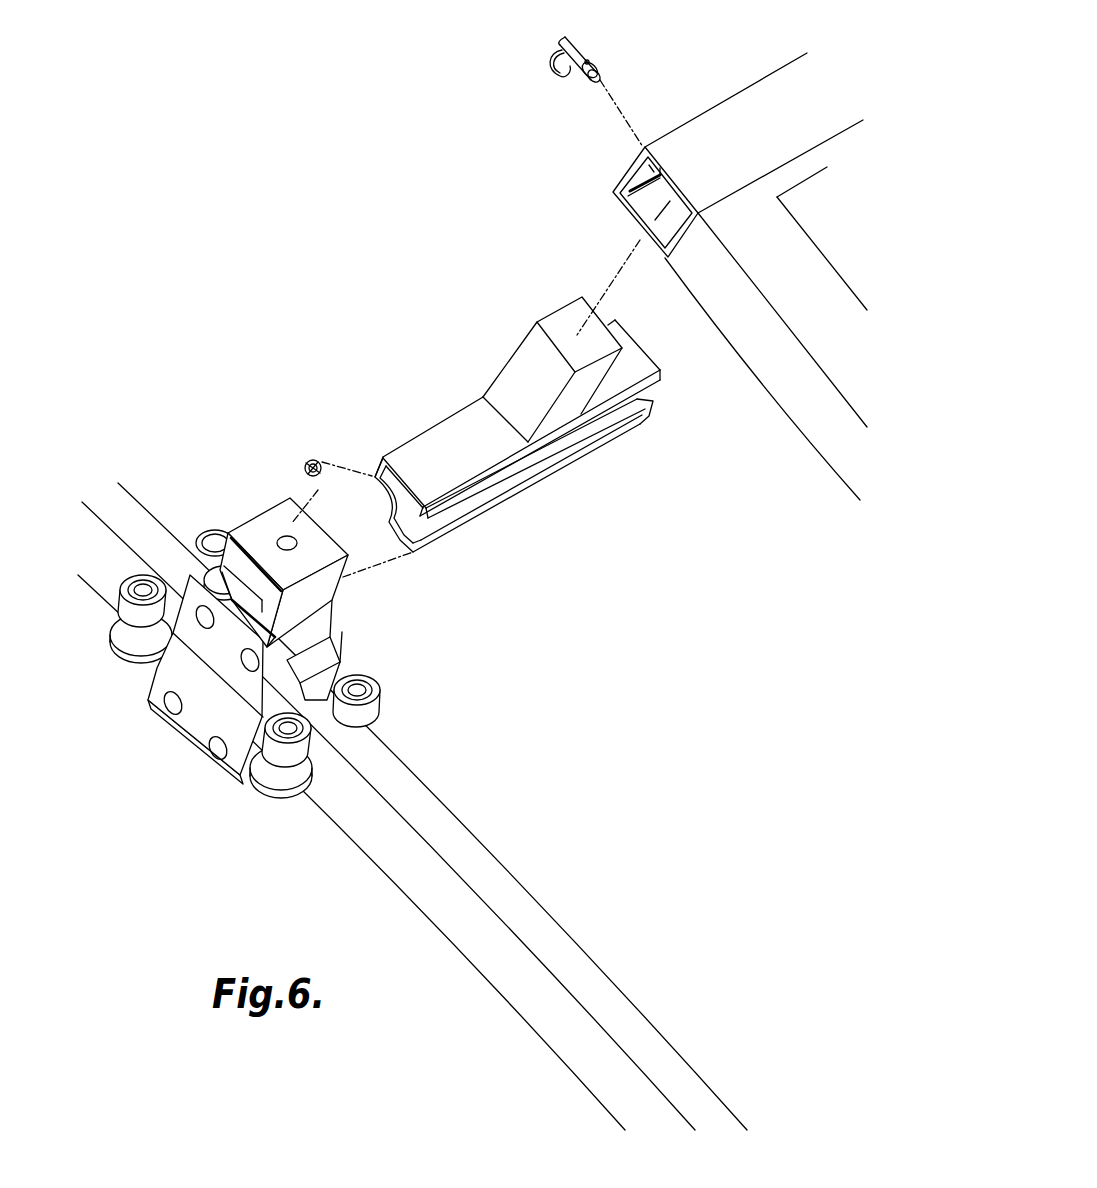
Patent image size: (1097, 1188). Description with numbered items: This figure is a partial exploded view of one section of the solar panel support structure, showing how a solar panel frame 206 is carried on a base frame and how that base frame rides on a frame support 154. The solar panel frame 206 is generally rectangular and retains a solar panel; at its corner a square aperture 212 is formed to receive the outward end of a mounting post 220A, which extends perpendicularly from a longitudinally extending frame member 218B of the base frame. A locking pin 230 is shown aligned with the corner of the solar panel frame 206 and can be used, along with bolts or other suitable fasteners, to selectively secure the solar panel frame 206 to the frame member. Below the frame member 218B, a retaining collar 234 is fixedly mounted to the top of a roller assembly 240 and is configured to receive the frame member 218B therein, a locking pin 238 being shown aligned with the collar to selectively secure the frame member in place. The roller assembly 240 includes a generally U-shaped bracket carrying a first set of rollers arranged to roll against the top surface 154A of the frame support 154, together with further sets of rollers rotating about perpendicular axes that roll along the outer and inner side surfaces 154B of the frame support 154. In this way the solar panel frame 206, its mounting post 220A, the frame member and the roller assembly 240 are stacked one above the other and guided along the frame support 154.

The frame support 154 is at (490, 1003).
The top surface of the frame support 154A is at (493, 866).
The side surface of the frame support 154B is at (440, 912).
The solar panel frame 206 is at (773, 390).
The square aperture 212 is at (642, 209).
The guide rail 218B is at (383, 457).
The mounting post 220A is at (515, 362).
The locking pin 230 is at (592, 50).
The retaining collar 234 is at (268, 509).
The locking pin 238 is at (313, 460).
The roller assembly 240 is at (350, 622).